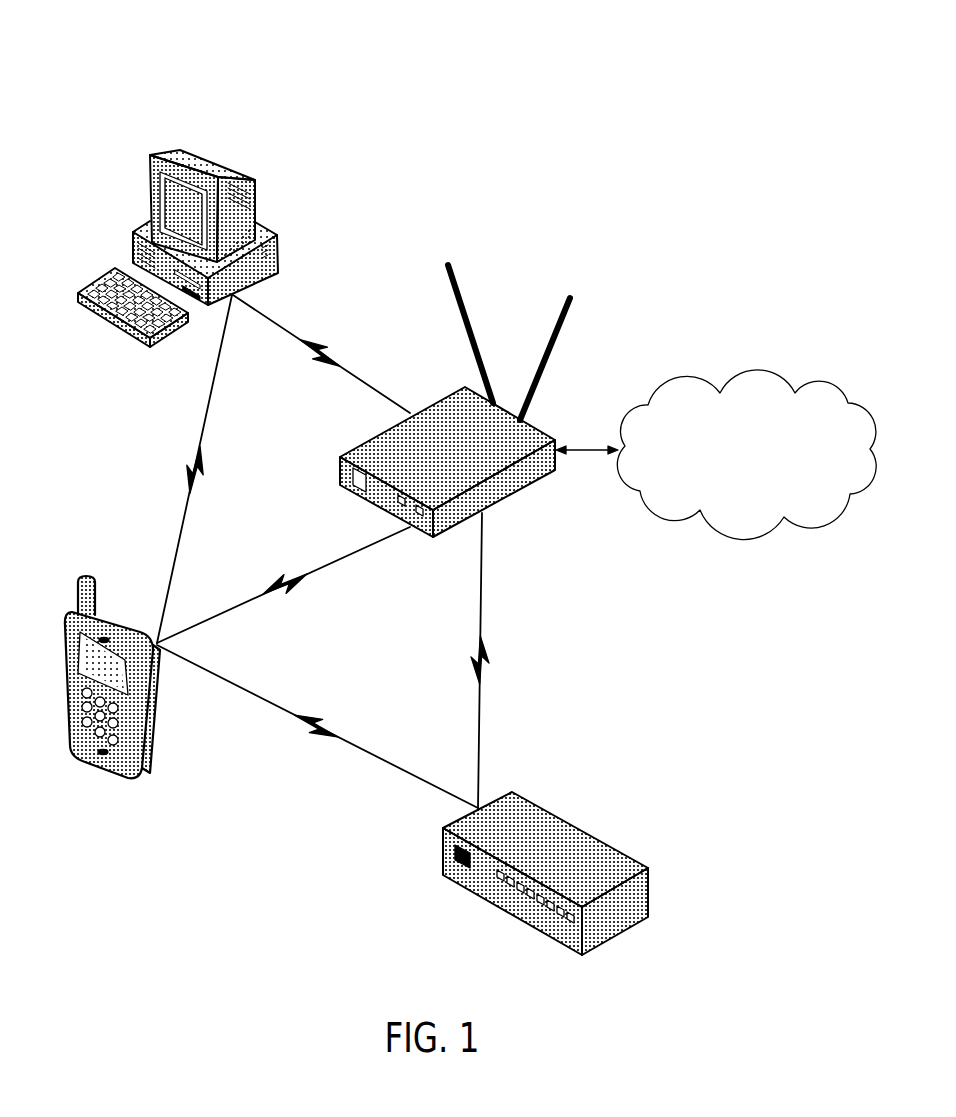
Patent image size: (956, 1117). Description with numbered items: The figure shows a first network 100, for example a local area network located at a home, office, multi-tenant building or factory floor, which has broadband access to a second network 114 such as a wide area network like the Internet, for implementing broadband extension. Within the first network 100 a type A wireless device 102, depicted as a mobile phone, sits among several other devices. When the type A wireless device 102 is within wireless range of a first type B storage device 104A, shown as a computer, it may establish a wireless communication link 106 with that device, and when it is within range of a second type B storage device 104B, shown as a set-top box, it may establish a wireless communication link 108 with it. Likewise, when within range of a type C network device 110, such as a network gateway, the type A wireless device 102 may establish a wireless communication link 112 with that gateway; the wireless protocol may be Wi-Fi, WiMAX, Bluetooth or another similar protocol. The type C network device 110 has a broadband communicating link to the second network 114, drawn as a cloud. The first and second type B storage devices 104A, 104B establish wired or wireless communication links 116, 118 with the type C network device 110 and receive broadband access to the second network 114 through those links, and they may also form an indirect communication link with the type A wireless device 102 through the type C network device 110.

The first network 100 is at (186, 65).
The type A wireless device 102 is at (68, 615).
The first type B storage device 104A is at (150, 160).
The second type B storage device 104B is at (602, 840).
The wireless communication link 106 is at (188, 480).
The wireless communication link 108 is at (334, 740).
The type C network device 110 is at (460, 383).
The wireless communication link 112 is at (296, 590).
The second network 114 is at (735, 373).
The communication link 116 is at (330, 368).
The communication link 118 is at (487, 650).